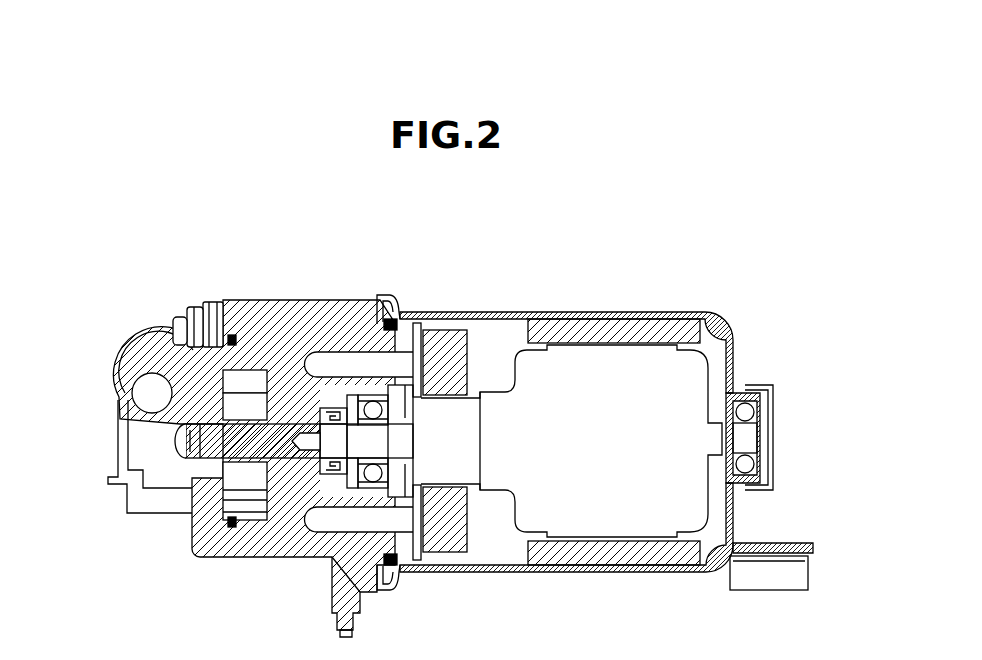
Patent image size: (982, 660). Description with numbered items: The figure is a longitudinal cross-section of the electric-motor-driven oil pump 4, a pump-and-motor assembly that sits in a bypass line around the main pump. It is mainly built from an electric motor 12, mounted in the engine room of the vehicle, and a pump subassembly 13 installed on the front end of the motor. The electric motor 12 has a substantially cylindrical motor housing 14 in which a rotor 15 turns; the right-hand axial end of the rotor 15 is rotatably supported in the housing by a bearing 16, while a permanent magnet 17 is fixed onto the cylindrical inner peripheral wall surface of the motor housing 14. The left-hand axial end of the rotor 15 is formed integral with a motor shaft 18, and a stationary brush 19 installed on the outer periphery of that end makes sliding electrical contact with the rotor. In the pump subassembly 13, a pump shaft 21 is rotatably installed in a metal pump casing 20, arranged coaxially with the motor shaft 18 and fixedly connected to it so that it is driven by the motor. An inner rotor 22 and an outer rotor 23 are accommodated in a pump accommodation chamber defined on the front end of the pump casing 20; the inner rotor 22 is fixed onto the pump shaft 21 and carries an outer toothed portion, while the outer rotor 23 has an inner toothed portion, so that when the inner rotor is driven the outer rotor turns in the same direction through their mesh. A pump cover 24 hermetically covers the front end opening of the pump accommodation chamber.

The electric-motor-driven oil pump 4 is at (495, 278).
The electric motor 12 is at (557, 293).
The pump subassembly 13 is at (336, 285).
The motor housing 14 is at (609, 311).
The rotor 15 is at (663, 365).
The bearing 16 is at (742, 405).
The permanent magnet 17 is at (650, 328).
The motor shaft 18 is at (397, 452).
The stationary brush 19 is at (445, 328).
The pump casing 20 is at (290, 300).
The pump shaft 21 is at (233, 453).
The inner rotor 22 is at (243, 394).
The outer rotor 23 is at (237, 378).
The pump cover 24 is at (160, 416).